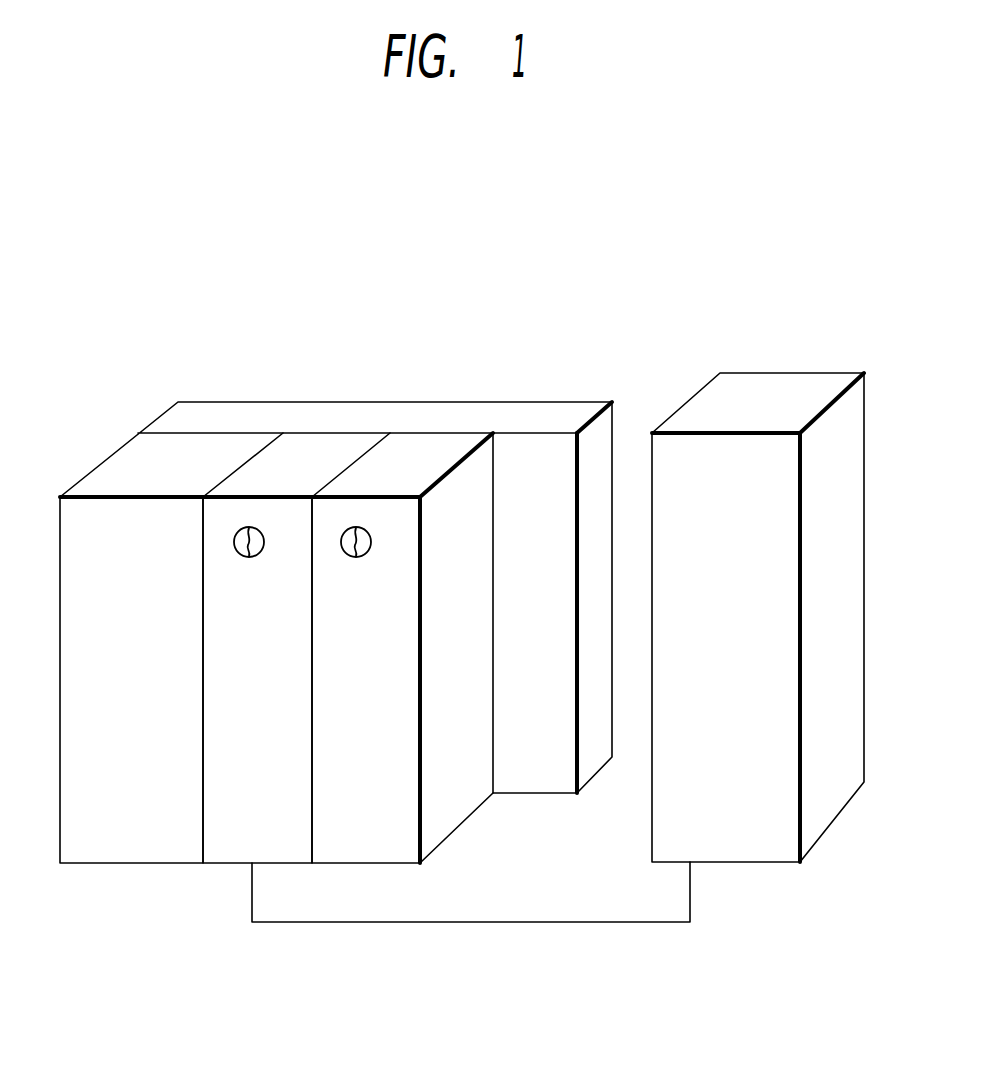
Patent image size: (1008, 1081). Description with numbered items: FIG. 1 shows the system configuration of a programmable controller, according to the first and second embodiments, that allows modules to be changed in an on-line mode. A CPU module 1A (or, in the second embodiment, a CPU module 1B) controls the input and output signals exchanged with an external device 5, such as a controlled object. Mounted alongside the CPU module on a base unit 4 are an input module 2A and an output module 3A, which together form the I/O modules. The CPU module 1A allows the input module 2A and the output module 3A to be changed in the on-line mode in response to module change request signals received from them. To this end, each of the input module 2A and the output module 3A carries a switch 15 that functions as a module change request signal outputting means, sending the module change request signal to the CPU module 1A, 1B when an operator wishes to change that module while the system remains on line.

The CPU module 1A is at (136, 601).
The CPU module 1B is at (131, 680).
The input module 2A is at (302, 450).
The output module 3A is at (402, 450).
The base unit 4 is at (482, 413).
The external device 5 is at (735, 390).
The switch 15 is at (300, 290).